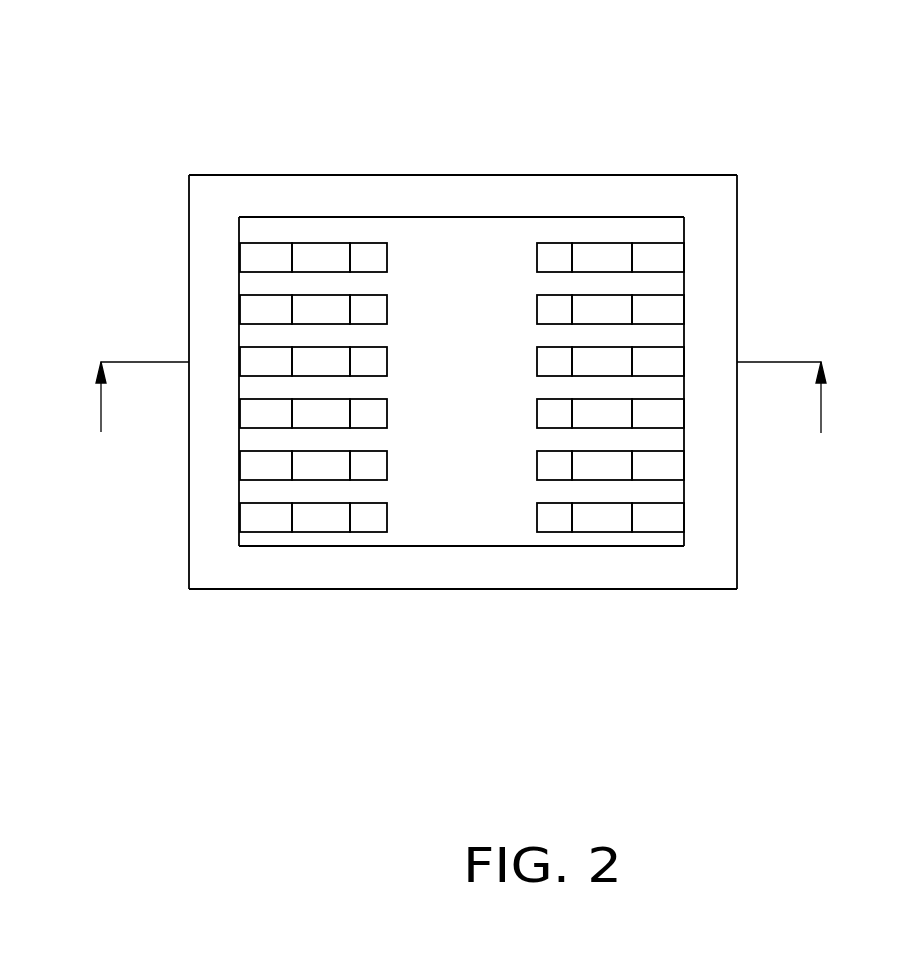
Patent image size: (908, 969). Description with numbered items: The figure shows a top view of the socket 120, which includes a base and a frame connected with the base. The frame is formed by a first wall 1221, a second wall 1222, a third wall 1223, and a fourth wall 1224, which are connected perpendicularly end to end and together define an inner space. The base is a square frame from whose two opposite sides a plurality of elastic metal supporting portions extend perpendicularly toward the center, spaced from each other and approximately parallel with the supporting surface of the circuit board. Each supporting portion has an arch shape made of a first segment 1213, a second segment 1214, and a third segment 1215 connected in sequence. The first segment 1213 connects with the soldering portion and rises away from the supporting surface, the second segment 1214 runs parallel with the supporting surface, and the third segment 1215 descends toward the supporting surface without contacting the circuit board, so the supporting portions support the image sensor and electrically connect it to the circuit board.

The socket 120 is at (717, 108).
The first wall 1221 is at (720, 305).
The second wall 1222 is at (472, 202).
The third wall 1223 is at (210, 275).
The fourth wall 1224 is at (343, 570).
The first segment 1213 is at (663, 517).
The second segment 1214 is at (610, 517).
The third segment 1215 is at (553, 517).